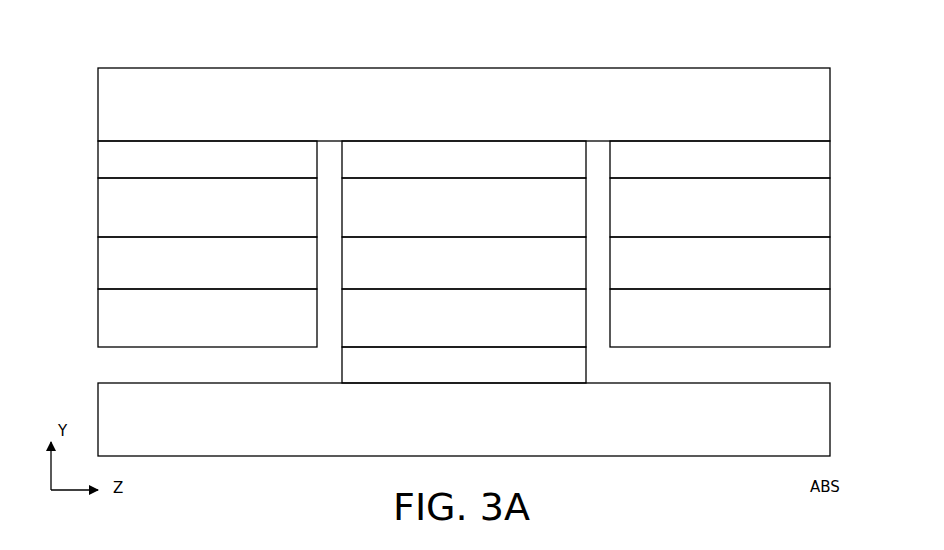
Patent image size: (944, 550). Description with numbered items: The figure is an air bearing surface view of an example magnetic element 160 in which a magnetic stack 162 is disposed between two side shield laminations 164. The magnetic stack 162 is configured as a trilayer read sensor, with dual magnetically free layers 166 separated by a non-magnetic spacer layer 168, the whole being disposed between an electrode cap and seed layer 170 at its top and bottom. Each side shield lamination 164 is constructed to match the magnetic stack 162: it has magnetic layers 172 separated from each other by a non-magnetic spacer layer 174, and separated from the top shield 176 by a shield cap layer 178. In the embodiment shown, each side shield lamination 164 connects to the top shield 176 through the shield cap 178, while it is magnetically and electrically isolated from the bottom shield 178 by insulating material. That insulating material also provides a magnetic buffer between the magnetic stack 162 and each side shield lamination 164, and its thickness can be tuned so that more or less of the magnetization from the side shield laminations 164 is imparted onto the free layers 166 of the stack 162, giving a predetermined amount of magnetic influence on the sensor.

The magnetic element 160 is at (146, 48).
The magnetic stack 162 is at (498, 262).
The side shield lamination 164 is at (463, 296).
The free layer 166 is at (464, 262).
The non-magnetic spacer layer 168 is at (464, 263).
The electrode cap and seed layer 170 is at (464, 262).
The magnetic layer 172 is at (97, 218).
The non-magnetic spacer layer 174 is at (97, 268).
The top shield 176 is at (464, 104).
The shield cap layer 178 is at (97, 164).